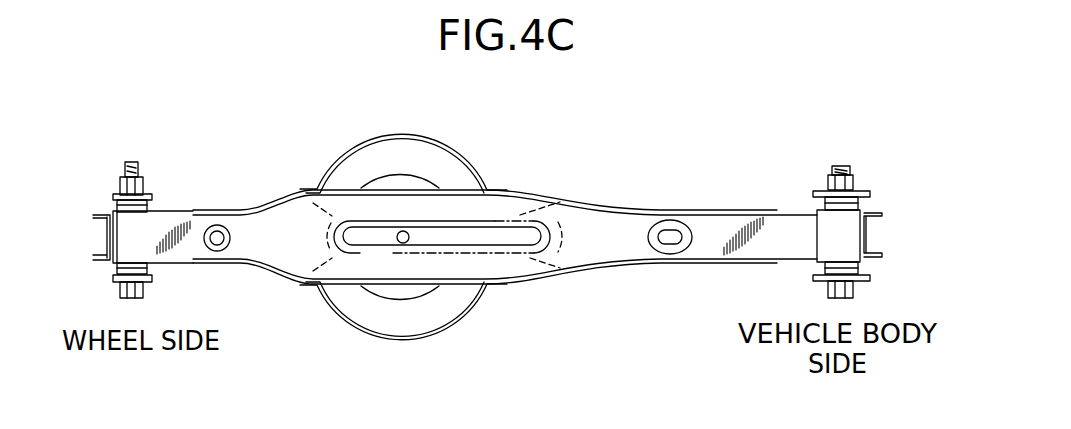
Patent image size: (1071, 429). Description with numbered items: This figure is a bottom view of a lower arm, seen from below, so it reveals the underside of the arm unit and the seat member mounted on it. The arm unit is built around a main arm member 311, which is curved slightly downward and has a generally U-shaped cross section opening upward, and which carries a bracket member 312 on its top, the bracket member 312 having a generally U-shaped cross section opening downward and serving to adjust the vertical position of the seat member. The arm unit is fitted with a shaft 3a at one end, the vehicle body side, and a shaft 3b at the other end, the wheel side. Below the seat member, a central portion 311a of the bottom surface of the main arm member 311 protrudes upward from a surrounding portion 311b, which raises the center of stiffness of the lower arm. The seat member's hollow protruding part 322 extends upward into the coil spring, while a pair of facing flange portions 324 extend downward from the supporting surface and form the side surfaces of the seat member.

The main arm member 311 is at (796, 210).
The central portion 311a is at (370, 240).
The surrounding portion 311b is at (358, 221).
The bracket member 312 is at (667, 209).
The protruding part 322 is at (408, 183).
The flange portions 324 is at (374, 146).
The shaft 3a is at (855, 182).
The shaft 3b is at (147, 183).